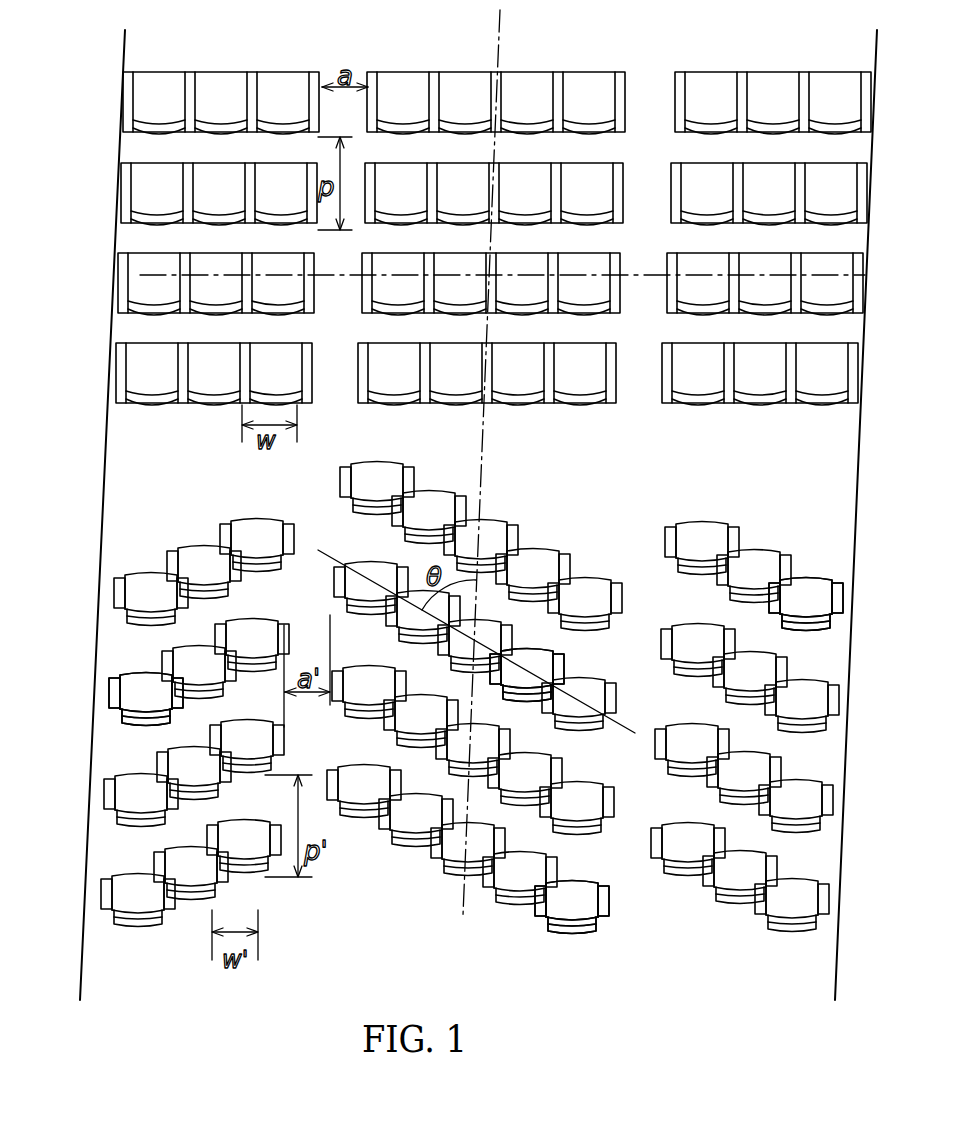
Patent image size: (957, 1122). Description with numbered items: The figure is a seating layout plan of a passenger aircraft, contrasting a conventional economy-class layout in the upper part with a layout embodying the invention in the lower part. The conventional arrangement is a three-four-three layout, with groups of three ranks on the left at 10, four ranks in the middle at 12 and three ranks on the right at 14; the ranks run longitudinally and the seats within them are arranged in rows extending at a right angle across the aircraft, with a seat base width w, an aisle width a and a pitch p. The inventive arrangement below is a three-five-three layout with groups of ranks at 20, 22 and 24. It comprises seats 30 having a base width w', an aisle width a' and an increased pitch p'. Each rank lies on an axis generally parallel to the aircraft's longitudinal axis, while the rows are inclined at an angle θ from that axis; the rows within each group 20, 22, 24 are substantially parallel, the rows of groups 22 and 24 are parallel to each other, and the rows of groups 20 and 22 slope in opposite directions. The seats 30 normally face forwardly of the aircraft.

The left group of ranks 10 is at (217, 205).
The middle group of ranks 12 is at (491, 207).
The right group of ranks 14 is at (766, 206).
The left group of ranks 20 is at (197, 695).
The middle group of ranks 22 is at (474, 698).
The right group of ranks 24 is at (747, 700).
The seat 30 is at (135, 697).